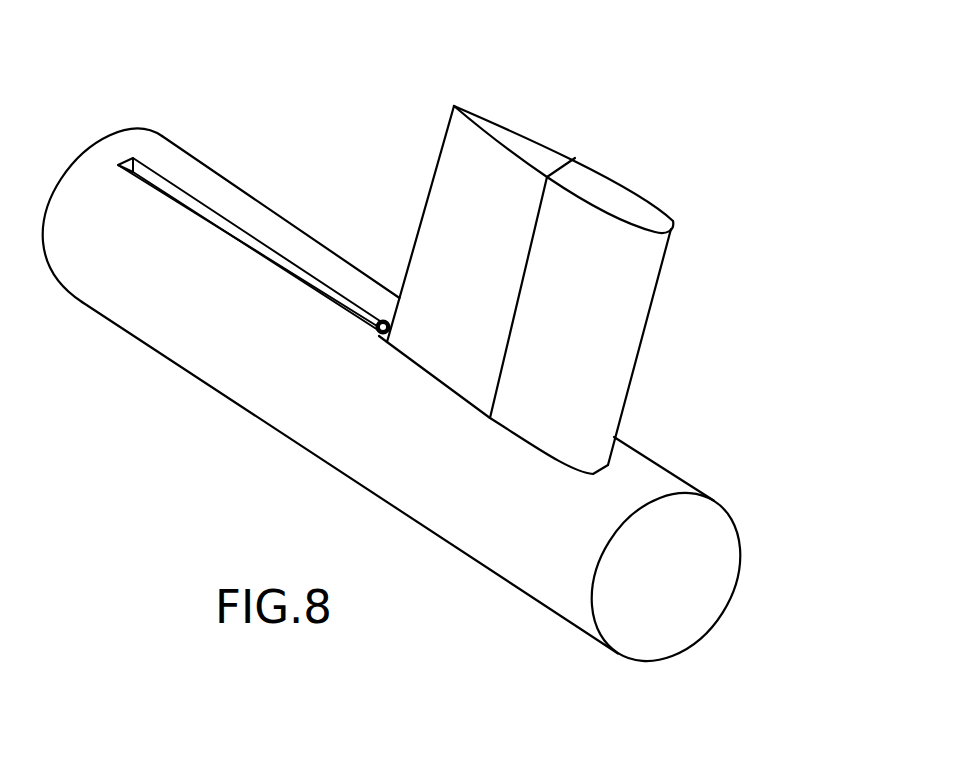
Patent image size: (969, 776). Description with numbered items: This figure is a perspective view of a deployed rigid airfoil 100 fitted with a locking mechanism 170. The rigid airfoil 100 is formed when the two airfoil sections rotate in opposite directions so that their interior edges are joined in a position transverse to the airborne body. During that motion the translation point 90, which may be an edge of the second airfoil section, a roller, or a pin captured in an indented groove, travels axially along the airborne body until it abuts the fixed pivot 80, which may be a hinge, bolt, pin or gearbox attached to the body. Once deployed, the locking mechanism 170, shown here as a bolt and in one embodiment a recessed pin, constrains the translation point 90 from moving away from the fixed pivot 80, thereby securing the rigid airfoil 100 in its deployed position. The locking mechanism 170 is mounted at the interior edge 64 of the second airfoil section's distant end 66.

The abutting end 64 is at (400, 297).
The distant end 66 is at (430, 374).
The fixed pivot 80 is at (611, 466).
The translation point 90 is at (377, 334).
The rigid airfoil 100 is at (689, 206).
The locking mechanism 170 is at (376, 328).